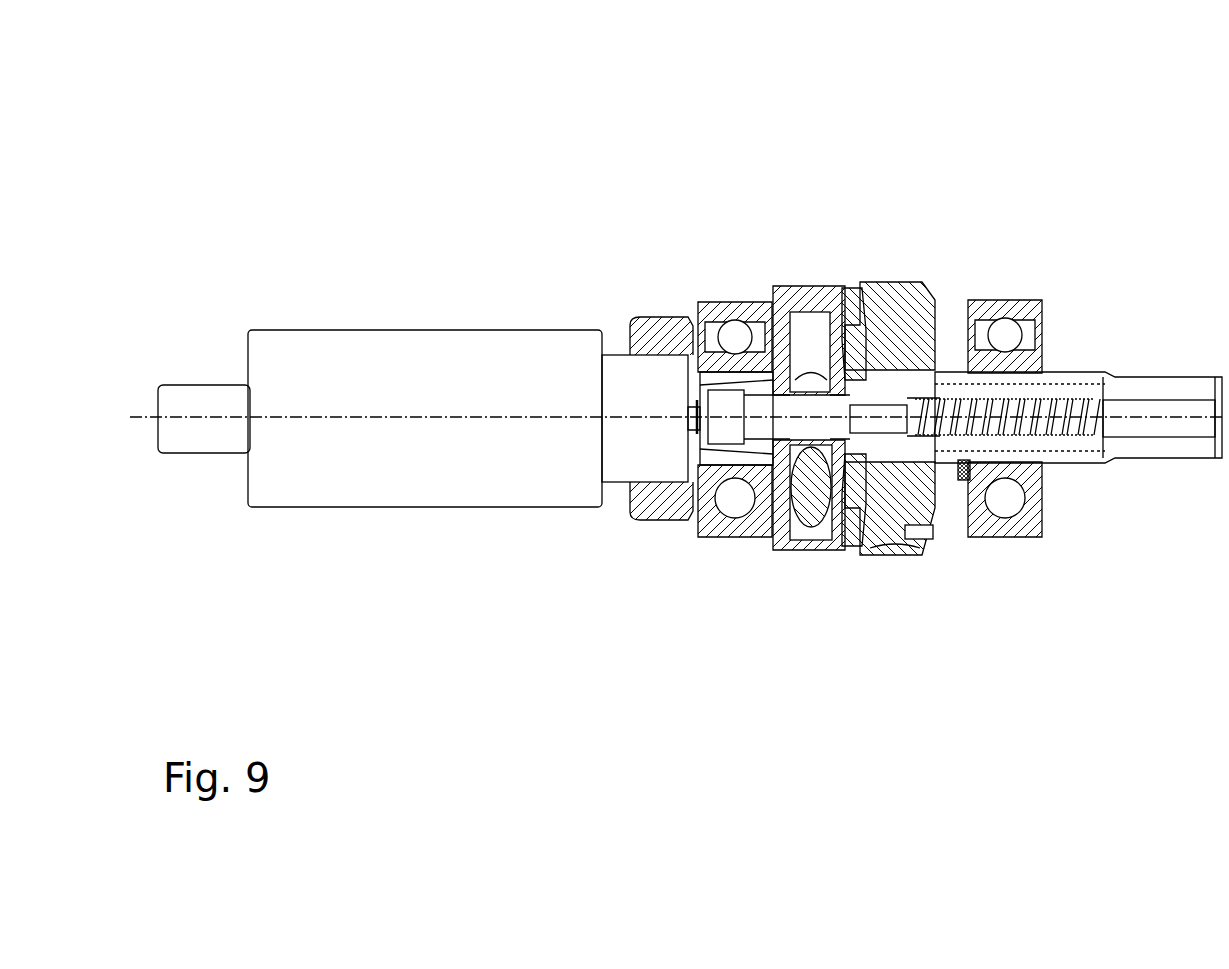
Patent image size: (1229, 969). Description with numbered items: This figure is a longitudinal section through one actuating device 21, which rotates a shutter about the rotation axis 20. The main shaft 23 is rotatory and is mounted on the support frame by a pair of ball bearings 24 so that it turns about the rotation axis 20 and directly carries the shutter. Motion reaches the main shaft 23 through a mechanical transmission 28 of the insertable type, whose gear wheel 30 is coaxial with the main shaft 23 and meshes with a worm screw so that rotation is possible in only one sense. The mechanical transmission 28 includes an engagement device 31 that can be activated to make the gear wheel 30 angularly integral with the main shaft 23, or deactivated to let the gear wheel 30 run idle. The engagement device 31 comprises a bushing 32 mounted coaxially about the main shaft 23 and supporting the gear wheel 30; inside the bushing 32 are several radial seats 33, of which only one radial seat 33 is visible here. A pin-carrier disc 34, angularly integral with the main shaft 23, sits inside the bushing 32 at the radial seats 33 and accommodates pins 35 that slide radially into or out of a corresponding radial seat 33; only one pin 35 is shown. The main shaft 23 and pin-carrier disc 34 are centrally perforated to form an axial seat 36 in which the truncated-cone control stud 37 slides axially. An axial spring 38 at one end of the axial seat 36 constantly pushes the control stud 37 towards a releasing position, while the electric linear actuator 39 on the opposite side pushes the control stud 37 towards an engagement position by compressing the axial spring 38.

The rotation axis 20 is at (373, 417).
The actuating device 21 is at (303, 98).
The main shaft 23 is at (1172, 388).
The ball bearings 24 is at (735, 305).
The mechanical transmission 28 is at (840, 182).
The gear wheel 30 is at (893, 293).
The engagement device 31 is at (753, 616).
The bushing 32 is at (805, 293).
The radial seat 33 is at (823, 532).
The pin-carrier disc 34 is at (838, 340).
The pin 35 is at (803, 490).
The axial seat 36 is at (963, 437).
The control stud 37 is at (766, 432).
The axial spring 38 is at (1069, 408).
The electric linear actuator 39 is at (496, 352).